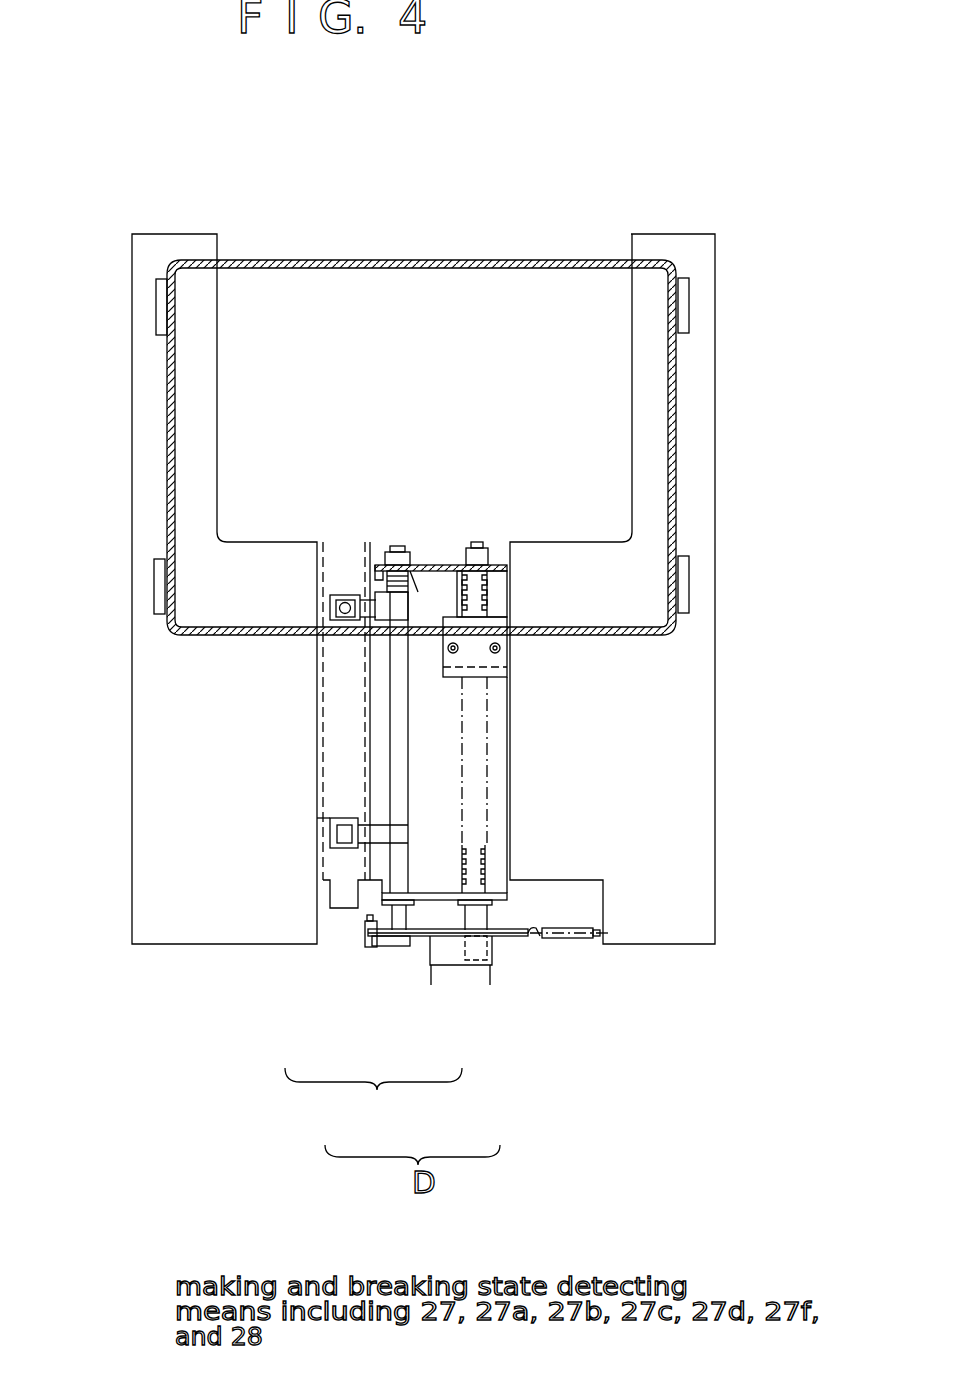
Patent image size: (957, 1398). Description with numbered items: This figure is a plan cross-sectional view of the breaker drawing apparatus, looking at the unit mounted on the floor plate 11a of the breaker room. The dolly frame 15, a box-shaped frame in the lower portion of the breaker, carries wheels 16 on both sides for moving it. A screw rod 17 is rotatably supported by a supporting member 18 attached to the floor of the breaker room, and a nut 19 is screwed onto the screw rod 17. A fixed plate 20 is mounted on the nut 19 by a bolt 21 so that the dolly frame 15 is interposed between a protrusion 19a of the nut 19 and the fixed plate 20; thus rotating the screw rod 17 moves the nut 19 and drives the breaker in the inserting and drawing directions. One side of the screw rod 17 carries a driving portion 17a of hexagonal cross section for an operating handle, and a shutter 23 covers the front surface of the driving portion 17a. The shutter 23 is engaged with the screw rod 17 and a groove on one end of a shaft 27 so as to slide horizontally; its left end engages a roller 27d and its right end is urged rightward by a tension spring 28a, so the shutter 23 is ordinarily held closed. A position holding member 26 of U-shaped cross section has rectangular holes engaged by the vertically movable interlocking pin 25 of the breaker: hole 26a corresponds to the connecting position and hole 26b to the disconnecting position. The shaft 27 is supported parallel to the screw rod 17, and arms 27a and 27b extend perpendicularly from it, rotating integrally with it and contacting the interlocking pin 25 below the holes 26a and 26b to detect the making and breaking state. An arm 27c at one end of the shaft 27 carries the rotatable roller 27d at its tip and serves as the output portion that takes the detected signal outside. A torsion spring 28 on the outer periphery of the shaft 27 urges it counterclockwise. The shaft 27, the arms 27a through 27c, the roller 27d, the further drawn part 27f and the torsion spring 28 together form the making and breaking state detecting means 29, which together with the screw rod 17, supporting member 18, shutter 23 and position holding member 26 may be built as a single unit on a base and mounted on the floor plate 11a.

The floor plate 11a is at (715, 512).
The dolly frame 15 is at (676, 396).
The wheels 16 is at (156, 306).
The screw rod 17 is at (488, 767).
The driving portion 17a is at (490, 950).
The supporting member 18 is at (488, 568).
The nut 19 is at (498, 680).
The protrusion 19a is at (500, 612).
The fixed plate 20 is at (497, 668).
The bolt 21 is at (500, 650).
The shutter 23 is at (490, 988).
The interlocking pin 25 is at (338, 597).
The position holding member 26 is at (317, 818).
The rectangular hole 26a is at (330, 603).
The rectangular hole 26b is at (330, 845).
The shaft 27 is at (407, 673).
The arm 27a is at (355, 597).
The arm 27b is at (350, 837).
The arm 27c is at (385, 940).
The roller 27d is at (368, 938).
The guide bracket 27f is at (388, 758).
The torsion spring 28 is at (418, 588).
The tension spring 28a is at (582, 940).
The making and breaking state detecting means 29 is at (308, 1087).